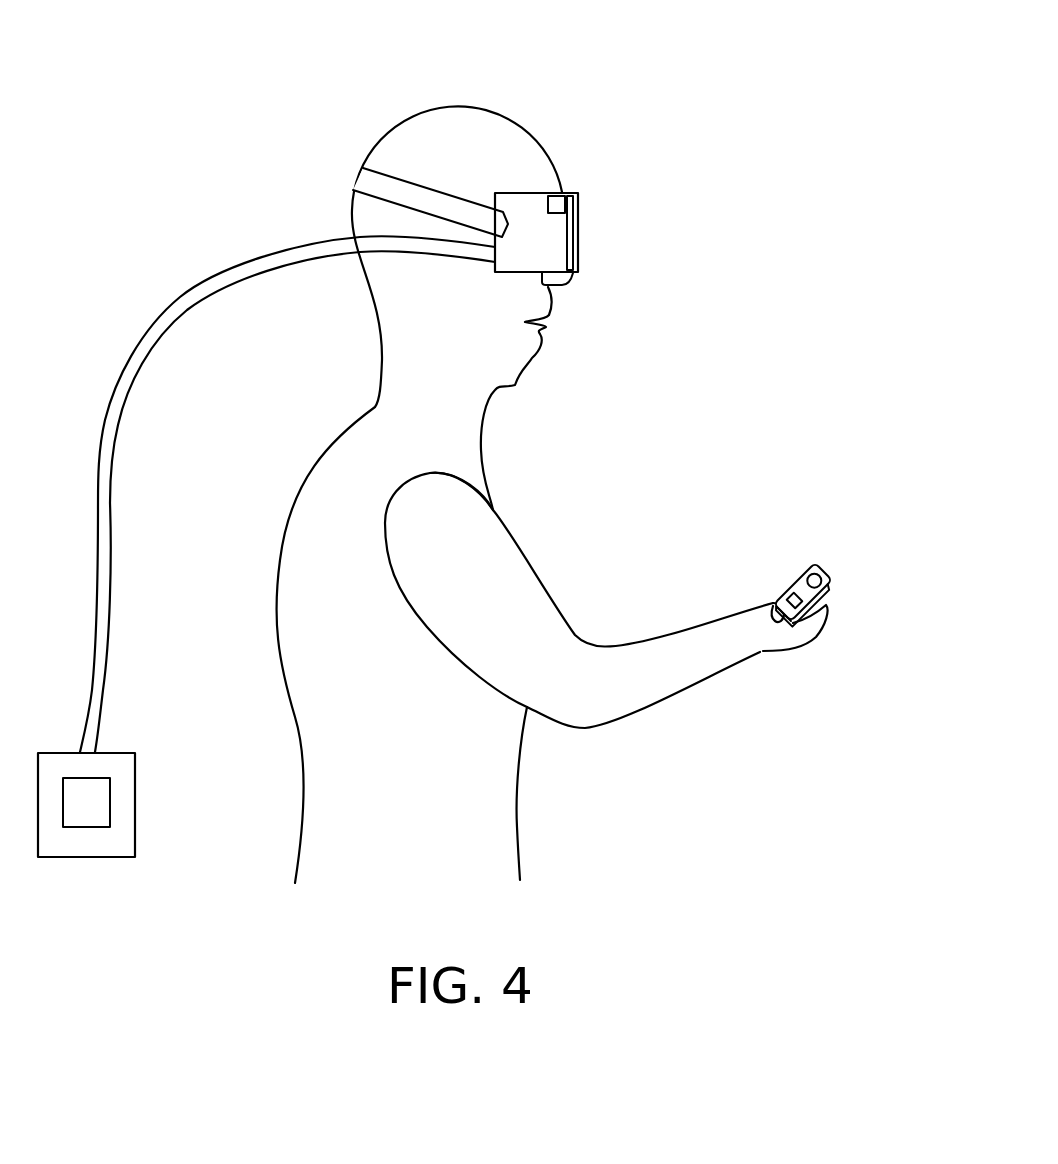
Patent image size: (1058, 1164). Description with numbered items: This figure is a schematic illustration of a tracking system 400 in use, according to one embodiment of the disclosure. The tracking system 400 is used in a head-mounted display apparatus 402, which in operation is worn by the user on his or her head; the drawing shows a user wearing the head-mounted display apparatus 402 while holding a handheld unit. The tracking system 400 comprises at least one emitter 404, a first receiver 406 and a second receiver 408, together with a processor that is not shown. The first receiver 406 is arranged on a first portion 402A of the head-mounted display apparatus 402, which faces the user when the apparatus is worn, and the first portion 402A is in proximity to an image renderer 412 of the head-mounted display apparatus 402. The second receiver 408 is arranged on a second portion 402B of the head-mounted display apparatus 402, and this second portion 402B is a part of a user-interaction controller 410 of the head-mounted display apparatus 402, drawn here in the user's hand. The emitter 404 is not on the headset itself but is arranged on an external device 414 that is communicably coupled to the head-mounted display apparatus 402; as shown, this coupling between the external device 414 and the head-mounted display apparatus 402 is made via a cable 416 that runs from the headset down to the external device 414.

The tracking system 400 is at (735, 72).
The head-mounted display apparatus 402 is at (568, 193).
The first portion 402A is at (592, 247).
The second portion 402B is at (795, 545).
The emitter 404 is at (88, 815).
The first receiver 406 is at (557, 198).
The second receiver 408 is at (755, 578).
The user-interaction controller 410 is at (856, 550).
The image renderer 412 is at (572, 230).
The external device 414 is at (125, 818).
The cable 416 is at (150, 328).